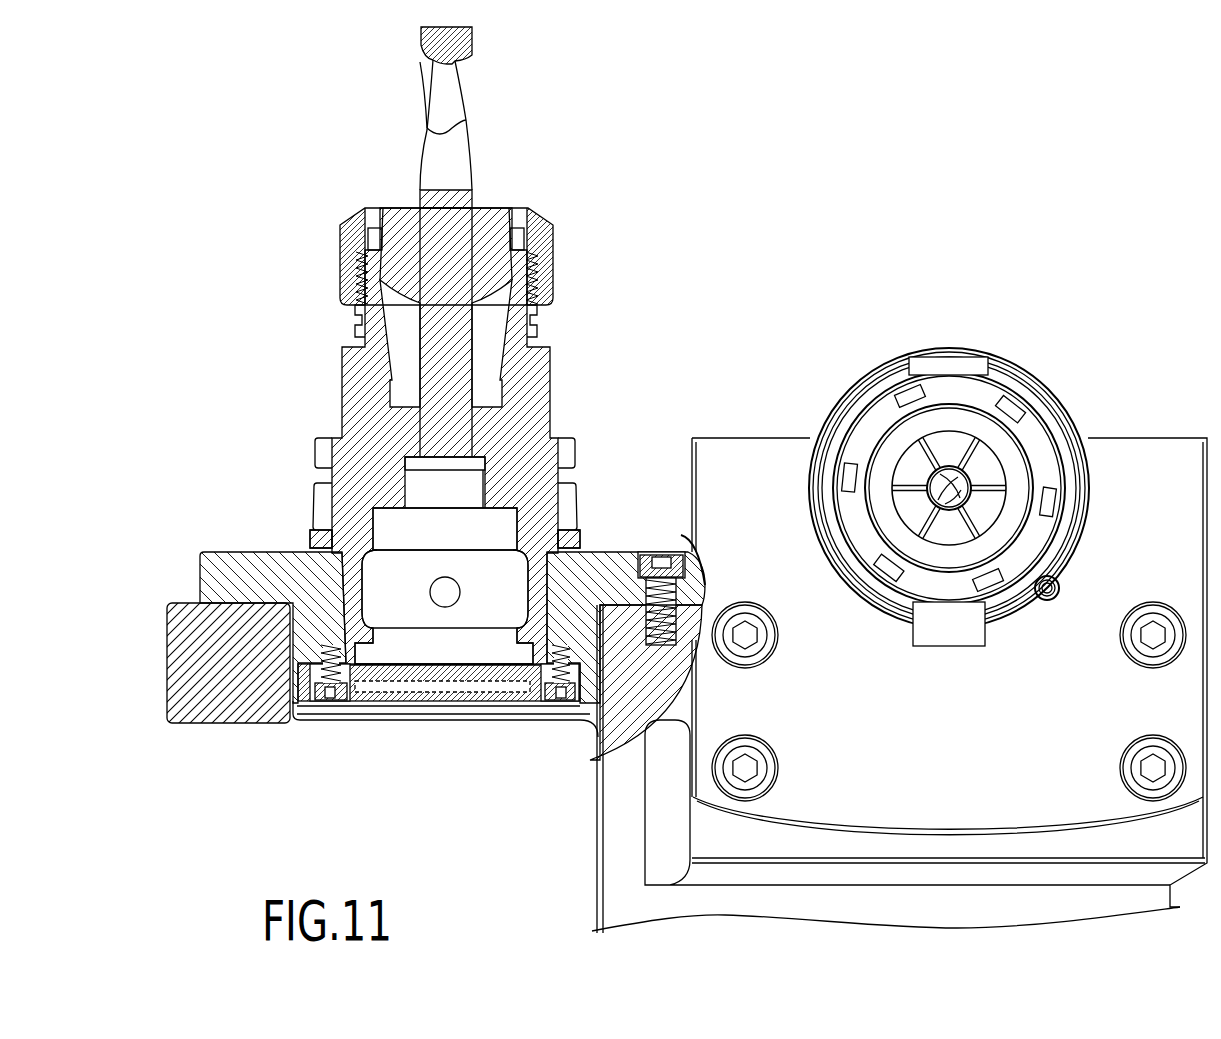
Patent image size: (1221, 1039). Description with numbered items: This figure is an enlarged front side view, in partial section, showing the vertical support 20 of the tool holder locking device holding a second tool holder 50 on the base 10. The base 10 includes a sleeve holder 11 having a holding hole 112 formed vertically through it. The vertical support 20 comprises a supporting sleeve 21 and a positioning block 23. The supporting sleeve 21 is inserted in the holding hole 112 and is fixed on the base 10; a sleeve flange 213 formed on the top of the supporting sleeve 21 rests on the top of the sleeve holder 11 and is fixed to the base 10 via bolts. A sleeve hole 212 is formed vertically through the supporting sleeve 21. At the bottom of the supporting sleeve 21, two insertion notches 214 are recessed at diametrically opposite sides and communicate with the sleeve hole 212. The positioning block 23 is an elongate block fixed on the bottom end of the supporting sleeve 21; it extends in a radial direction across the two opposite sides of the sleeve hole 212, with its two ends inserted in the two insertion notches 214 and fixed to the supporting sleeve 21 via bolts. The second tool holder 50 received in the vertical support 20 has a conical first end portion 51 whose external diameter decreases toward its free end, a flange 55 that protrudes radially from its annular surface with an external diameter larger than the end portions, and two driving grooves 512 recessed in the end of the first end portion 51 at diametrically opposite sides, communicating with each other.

The base 10 is at (596, 853).
The vertical support 20 is at (430, 628).
The supporting sleeve 21 is at (413, 578).
The sleeve flange 213 is at (287, 573).
The sleeve hole 212 is at (575, 540).
The insertion notches 214 is at (600, 690).
The sleeve holder 11 is at (180, 668).
The holding hole 112 is at (291, 712).
The positioning block 23 is at (480, 695).
The first end portion 51 is at (362, 645).
The second tool holder 50 is at (475, 346).
The flange 55 is at (548, 492).
The driving grooves 512 is at (540, 640).